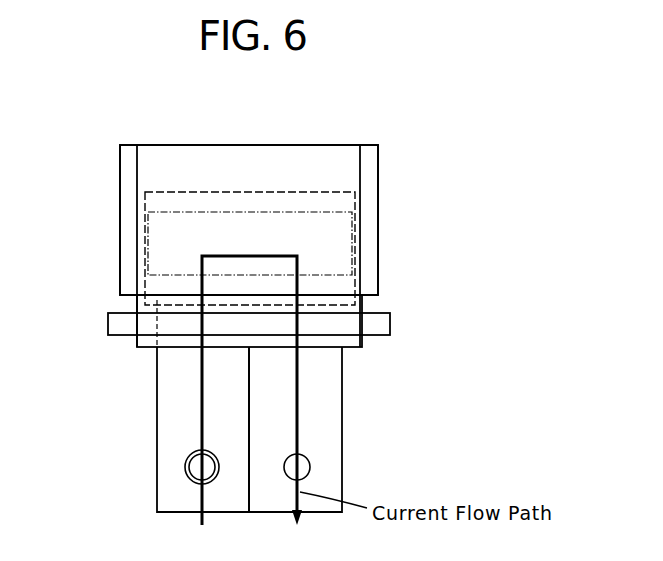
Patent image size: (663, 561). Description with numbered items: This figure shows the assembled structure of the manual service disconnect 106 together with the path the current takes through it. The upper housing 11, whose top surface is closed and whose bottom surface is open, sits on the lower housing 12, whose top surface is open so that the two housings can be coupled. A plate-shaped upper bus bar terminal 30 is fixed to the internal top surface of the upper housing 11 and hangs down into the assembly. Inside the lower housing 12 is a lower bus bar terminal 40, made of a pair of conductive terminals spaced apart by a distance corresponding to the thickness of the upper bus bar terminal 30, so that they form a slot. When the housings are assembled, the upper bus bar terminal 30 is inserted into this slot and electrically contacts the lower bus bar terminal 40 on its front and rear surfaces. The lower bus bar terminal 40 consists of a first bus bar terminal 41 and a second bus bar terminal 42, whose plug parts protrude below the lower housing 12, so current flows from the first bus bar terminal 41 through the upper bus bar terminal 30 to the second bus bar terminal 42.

The manual service disconnect 106 is at (96, 123).
The upper housing 11 is at (378, 157).
The lower housing 12 is at (390, 325).
The upper bus bar terminal 30 is at (363, 202).
The lower bus bar terminal 40 is at (362, 285).
The first bus bar terminal 41 is at (157, 416).
The second bus bar terminal 42 is at (335, 416).